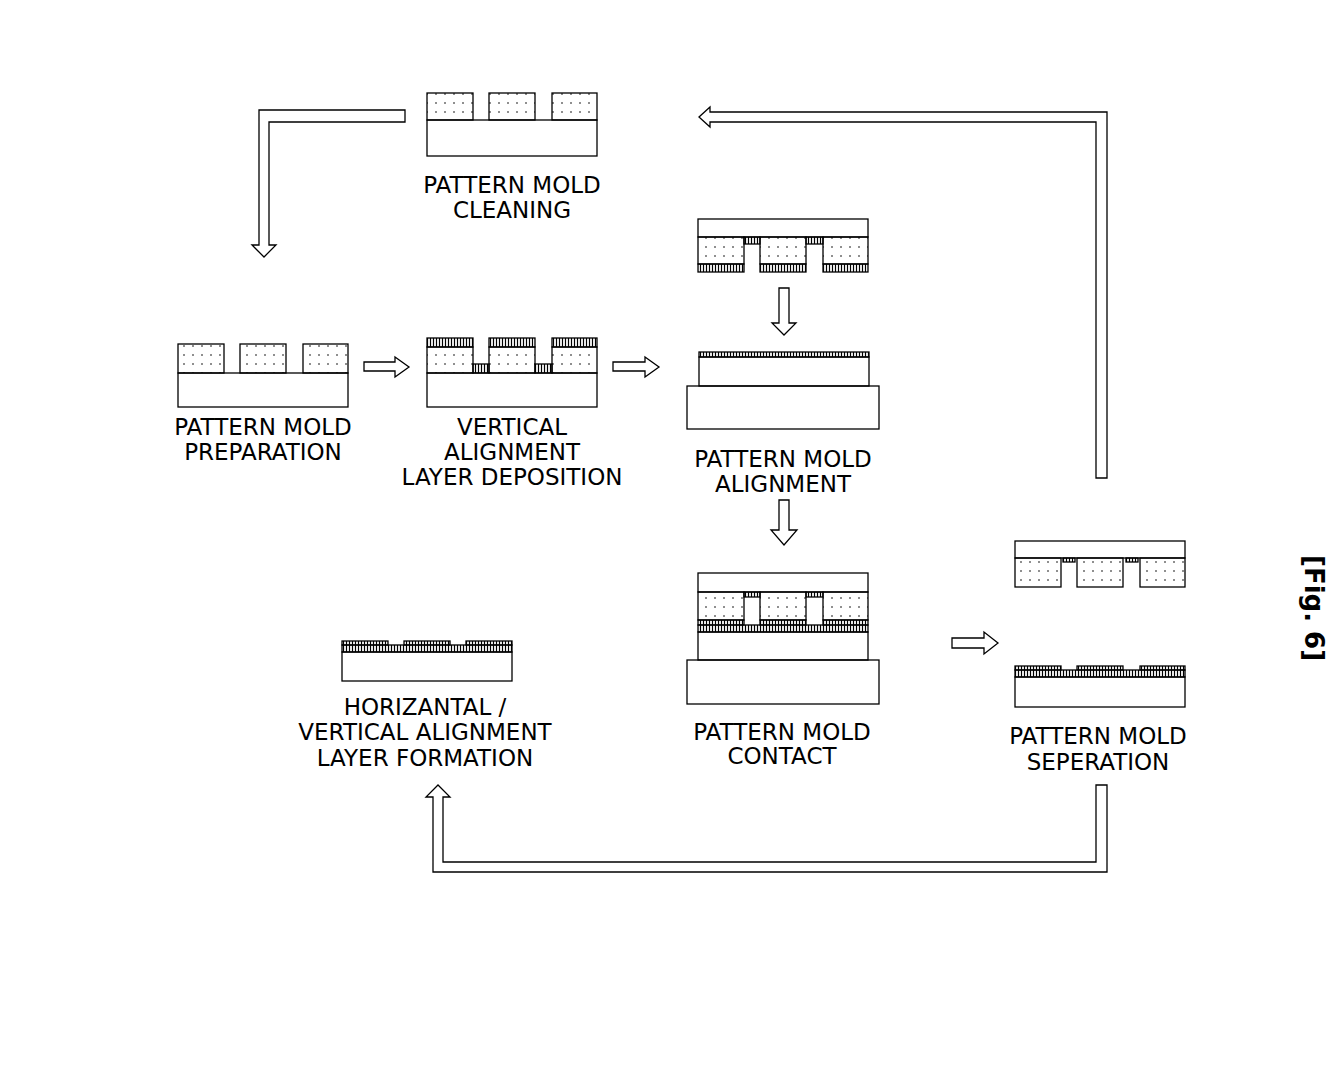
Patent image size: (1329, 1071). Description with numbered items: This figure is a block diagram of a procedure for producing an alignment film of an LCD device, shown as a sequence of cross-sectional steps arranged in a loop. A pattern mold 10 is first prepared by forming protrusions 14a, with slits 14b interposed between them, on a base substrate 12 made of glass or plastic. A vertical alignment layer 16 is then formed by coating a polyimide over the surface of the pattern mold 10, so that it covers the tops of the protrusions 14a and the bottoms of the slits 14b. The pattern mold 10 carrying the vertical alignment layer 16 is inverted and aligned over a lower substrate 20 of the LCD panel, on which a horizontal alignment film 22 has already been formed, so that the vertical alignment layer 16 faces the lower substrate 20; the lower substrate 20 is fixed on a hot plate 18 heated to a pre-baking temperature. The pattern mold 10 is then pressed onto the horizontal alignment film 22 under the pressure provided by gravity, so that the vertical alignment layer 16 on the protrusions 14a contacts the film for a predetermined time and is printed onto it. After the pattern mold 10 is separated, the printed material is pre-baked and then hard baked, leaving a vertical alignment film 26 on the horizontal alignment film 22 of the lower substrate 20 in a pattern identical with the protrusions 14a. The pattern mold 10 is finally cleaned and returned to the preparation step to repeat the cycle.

The pattern mold 10 is at (478, 75).
The base substrate 12 is at (597, 130).
The protrusions 14a is at (597, 102).
The slits 14b is at (543, 97).
The vertical alignment layer 16 is at (573, 338).
The hot plate 18 is at (879, 410).
The lower substrate 20 is at (869, 375).
The horizontal alignment film 22 is at (869, 354).
The vertical alignment film 26 is at (1185, 668).